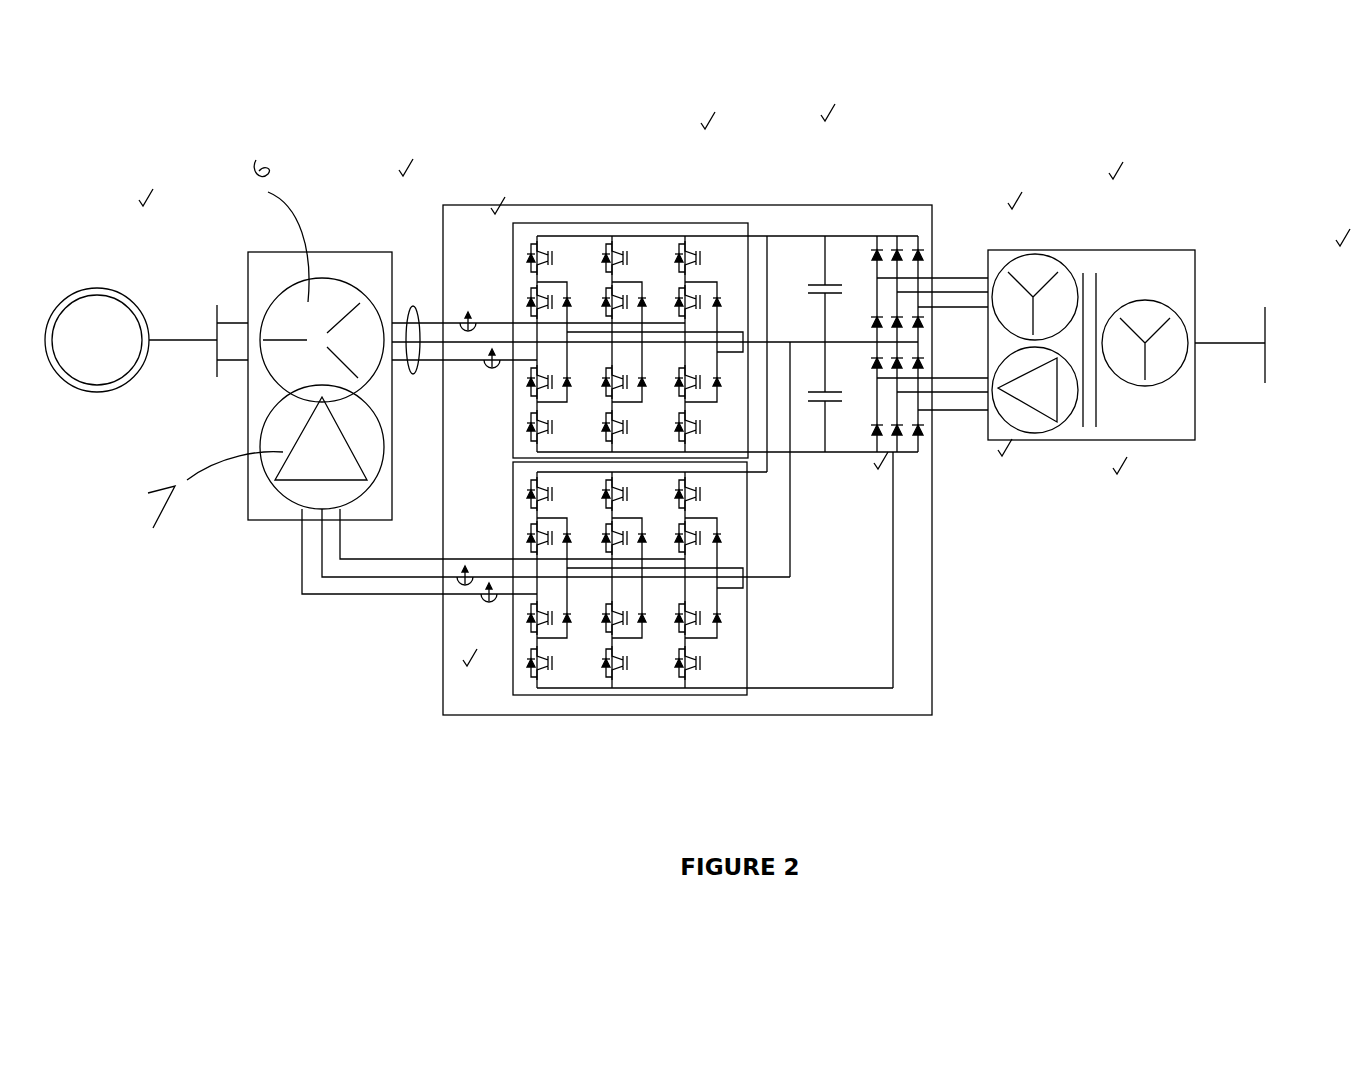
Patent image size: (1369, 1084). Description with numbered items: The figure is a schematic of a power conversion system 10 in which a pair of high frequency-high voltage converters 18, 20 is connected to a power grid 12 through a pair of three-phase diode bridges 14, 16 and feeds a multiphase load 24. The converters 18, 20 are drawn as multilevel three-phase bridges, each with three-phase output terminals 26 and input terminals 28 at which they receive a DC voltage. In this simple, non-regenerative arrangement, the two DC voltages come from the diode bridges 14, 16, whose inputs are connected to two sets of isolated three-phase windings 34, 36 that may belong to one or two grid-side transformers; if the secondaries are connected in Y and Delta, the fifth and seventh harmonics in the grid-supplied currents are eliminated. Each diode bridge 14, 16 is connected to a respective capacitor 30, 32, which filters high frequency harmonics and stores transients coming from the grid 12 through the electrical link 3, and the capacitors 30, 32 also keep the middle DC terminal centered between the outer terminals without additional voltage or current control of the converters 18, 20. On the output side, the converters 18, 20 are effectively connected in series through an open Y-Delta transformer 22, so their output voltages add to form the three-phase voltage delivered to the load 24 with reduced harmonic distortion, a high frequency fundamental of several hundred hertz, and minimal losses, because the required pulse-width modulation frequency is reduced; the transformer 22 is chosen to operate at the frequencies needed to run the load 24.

The electrical link 3 is at (168, 357).
The power conversion system 10 is at (645, 183).
The power grid 12 is at (1270, 300).
The three-phase diode bridge 14 is at (938, 258).
The three-phase diode bridge 16 is at (937, 428).
The converter 18 is at (512, 278).
The converter 20 is at (508, 638).
The open Y-Delta transformer 22 is at (342, 240).
The multiphase load 24 is at (97, 287).
The three-phase output terminals 26 is at (413, 374).
The input terminals 28 is at (790, 337).
The capacitor 30 is at (832, 283).
The capacitor 32 is at (832, 403).
The isolated three-phase winding 34 is at (1048, 242).
The isolated three-phase winding 36 is at (1045, 445).